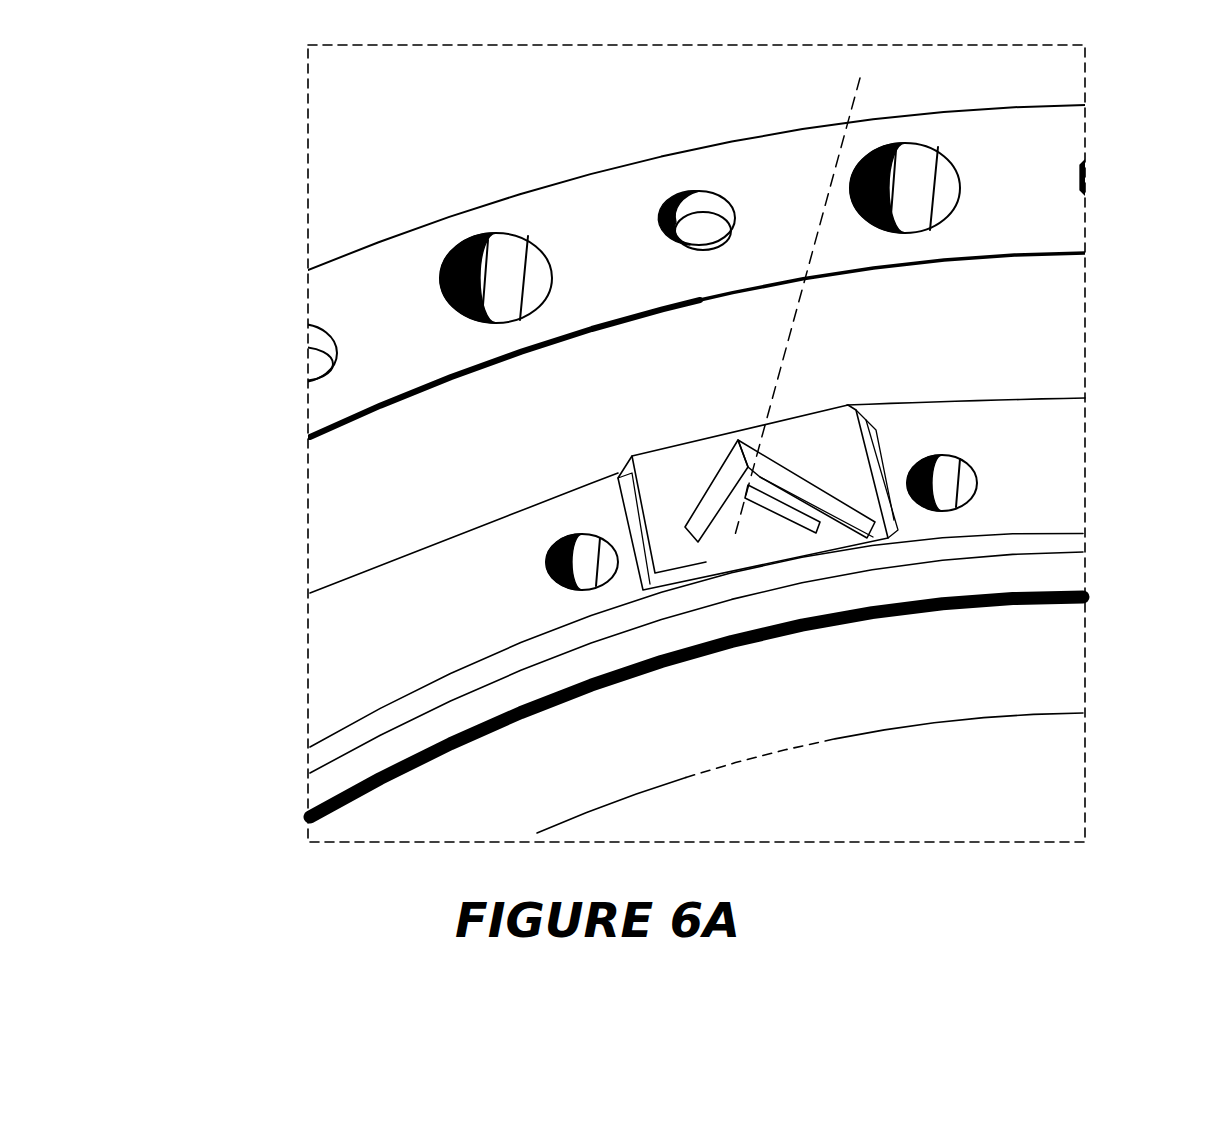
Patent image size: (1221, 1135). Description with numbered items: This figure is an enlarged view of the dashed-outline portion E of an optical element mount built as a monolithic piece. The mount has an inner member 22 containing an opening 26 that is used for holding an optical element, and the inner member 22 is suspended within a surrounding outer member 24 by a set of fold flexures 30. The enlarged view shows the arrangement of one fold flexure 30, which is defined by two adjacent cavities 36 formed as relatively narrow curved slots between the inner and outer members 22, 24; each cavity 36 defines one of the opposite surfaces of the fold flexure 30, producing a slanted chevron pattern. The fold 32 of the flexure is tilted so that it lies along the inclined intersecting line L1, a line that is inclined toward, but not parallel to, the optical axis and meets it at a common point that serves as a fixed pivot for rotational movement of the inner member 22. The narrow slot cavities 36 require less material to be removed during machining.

The inner member 22 is at (1077, 662).
The outer member 24 is at (520, 192).
The opening 26 is at (1004, 794).
The fold flexure 30 is at (720, 512).
The fold 32 is at (750, 467).
The cavity 36 is at (493, 513).
The inclined intersecting line L1 is at (823, 213).
The portion E is at (303, 410).